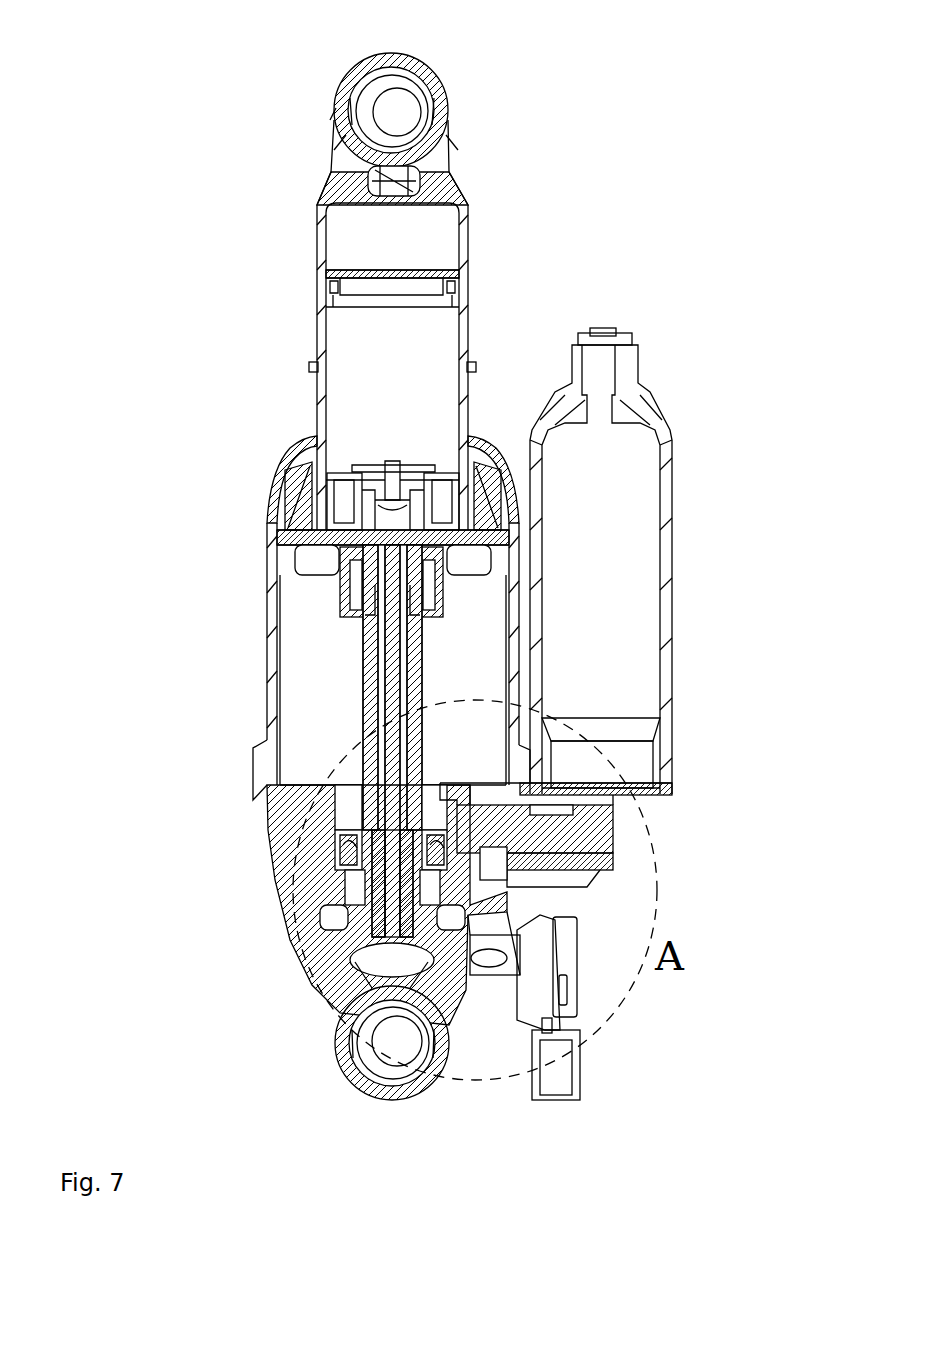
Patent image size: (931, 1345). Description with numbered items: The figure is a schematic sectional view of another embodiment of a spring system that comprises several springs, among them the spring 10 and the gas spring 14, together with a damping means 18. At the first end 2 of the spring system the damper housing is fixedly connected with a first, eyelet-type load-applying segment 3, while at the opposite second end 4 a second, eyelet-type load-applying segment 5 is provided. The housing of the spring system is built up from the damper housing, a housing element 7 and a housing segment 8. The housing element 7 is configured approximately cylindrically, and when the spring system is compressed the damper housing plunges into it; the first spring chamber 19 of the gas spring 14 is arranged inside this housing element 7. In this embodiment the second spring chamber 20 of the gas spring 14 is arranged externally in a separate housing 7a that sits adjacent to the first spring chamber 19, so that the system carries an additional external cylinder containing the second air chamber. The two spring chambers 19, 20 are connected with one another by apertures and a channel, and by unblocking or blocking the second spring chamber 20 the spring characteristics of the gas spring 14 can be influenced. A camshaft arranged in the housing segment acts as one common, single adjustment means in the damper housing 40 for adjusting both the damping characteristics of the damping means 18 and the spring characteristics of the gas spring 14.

The first end 2 is at (302, 100).
The first eyelet-type load-applying segment 3 is at (328, 62).
The second end 4 is at (322, 1085).
The second eyelet-type load-applying segment 5 is at (345, 1113).
The housing element 7 is at (252, 665).
The separate housing 7a is at (683, 535).
The housing segment 8 is at (270, 877).
The spring 10 is at (352, 238).
The gas spring 14 is at (297, 622).
The damping means 18 is at (263, 297).
The first spring chamber 19 is at (297, 730).
The second spring chamber 20 is at (634, 634).
The damper housing 40 is at (181, 419).